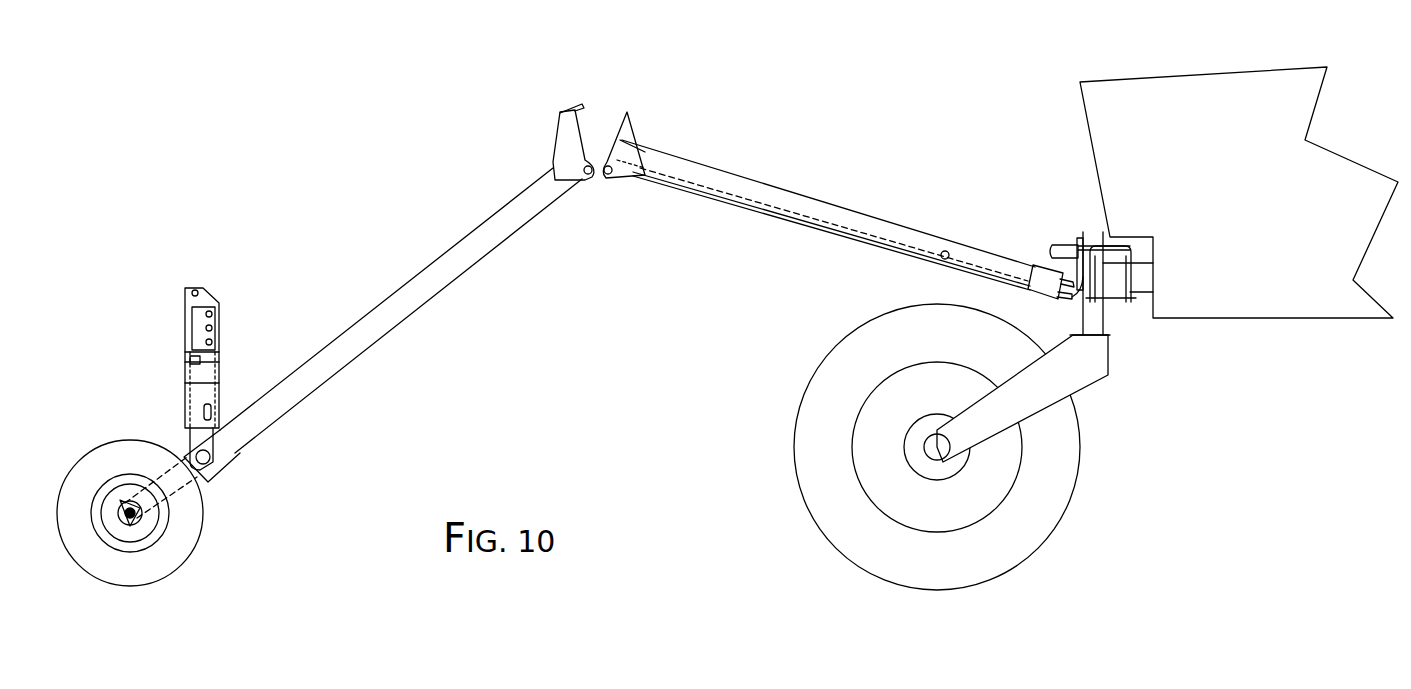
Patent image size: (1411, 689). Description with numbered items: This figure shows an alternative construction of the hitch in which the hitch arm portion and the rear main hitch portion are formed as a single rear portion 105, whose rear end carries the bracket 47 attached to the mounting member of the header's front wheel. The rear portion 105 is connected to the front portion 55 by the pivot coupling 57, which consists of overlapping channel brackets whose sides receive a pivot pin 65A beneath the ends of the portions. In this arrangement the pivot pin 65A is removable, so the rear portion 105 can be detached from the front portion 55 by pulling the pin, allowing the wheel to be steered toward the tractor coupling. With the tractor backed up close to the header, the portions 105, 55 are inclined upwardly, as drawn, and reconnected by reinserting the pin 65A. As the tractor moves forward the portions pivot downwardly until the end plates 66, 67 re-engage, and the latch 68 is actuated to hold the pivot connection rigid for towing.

The bracket 47 is at (228, 458).
The front portion 55 is at (850, 215).
The pivot coupling 57 is at (637, 90).
The pivot pin 65A is at (605, 175).
The end plate 66 is at (580, 132).
The end plate 67 is at (615, 118).
The latch 68 is at (573, 108).
The rear portion 105 is at (400, 283).